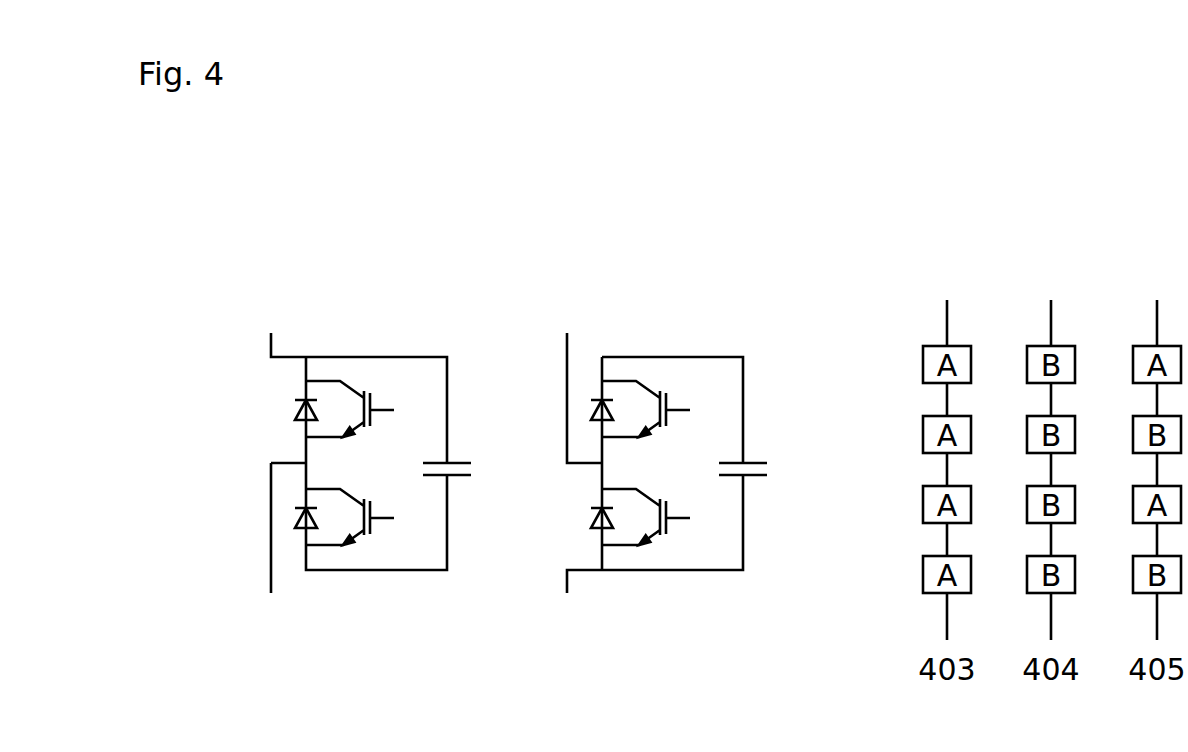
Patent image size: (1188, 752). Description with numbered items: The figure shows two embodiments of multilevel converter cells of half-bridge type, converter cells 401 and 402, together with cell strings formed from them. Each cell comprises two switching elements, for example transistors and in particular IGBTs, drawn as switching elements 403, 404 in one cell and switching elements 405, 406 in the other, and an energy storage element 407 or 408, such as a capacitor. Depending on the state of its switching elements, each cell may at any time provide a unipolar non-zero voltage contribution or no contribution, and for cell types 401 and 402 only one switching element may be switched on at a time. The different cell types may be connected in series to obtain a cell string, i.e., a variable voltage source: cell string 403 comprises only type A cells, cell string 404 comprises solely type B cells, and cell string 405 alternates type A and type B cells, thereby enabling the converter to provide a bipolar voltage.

The converter cell 401 is at (400, 667).
The converter cell 402 is at (692, 667).
The switching element 403 is at (364, 405).
The switching element 404 is at (364, 525).
The switching element 405 is at (660, 405).
The switching element 406 is at (660, 525).
The energy storage element 407 is at (470, 452).
The energy storage element 408 is at (766, 452).